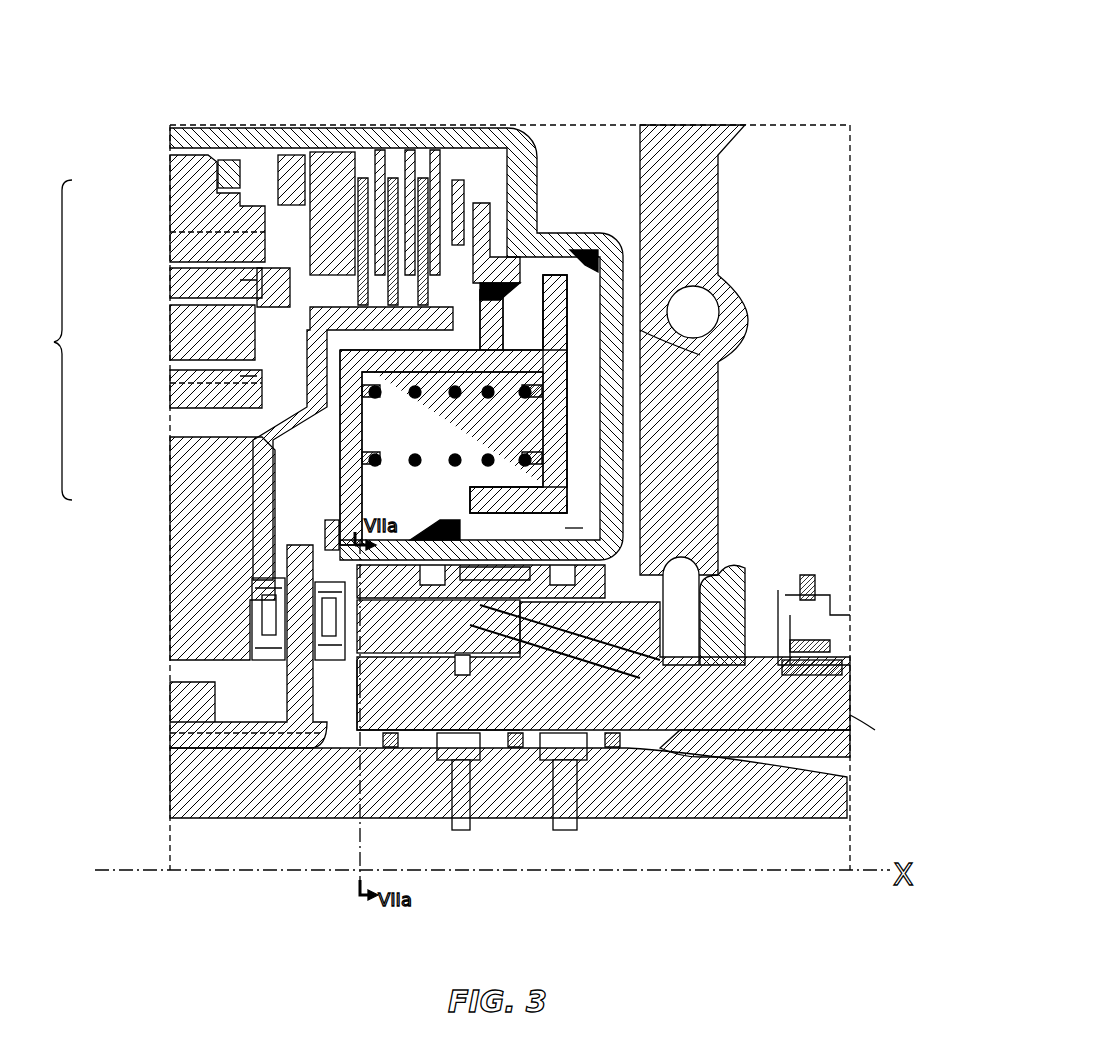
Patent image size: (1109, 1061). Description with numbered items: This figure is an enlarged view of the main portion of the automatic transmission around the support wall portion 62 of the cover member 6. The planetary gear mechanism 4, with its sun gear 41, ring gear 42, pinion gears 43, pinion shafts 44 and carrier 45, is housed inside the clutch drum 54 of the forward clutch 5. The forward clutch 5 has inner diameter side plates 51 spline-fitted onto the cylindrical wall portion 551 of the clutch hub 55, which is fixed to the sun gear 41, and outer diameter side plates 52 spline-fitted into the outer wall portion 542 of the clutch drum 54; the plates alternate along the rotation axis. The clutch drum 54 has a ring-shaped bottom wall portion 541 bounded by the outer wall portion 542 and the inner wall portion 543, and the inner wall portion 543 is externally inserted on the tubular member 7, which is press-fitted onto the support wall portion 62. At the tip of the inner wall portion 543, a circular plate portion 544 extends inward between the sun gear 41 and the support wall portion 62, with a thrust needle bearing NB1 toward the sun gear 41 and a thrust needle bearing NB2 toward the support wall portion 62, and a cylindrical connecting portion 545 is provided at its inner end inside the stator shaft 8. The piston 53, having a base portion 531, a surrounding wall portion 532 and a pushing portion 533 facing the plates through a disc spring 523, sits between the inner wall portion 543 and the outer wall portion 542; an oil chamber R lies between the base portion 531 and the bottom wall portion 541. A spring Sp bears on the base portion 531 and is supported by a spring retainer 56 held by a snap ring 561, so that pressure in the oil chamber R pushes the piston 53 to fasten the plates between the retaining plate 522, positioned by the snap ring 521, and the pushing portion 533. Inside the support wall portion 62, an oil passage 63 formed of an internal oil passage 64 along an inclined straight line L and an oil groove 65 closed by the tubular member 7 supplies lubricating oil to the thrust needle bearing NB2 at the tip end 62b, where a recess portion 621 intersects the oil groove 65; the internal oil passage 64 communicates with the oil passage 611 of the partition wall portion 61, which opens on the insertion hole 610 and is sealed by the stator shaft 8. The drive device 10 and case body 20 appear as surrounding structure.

The planetary gear mechanism 4 is at (156, 407).
The sun gear 41 is at (180, 484).
The ring gear 42 is at (180, 220).
The pinion gears 43 is at (180, 290).
The pinion shafts 44 is at (182, 344).
The carrier 45 is at (182, 396).
The forward clutch 5 is at (555, 150).
The inner diameter side plates 51 is at (350, 150).
The outer diameter side plates 52 is at (420, 150).
The snap ring 521 is at (290, 150).
The retaining plate 522 is at (328, 152).
The disc spring 523 is at (465, 200).
The piston 53 is at (640, 128).
The base portion 531 is at (545, 428).
The surrounding wall portion 532 is at (570, 255).
The pushing portion 533 is at (488, 160).
The clutch drum 54 is at (537, 128).
The bottom wall portion 541 is at (700, 355).
The outer wall portion 542 is at (213, 130).
The inner wall portion 543 is at (405, 535).
The circular plate portion 544 is at (310, 695).
The cylindrical connecting portion 545 is at (239, 788).
The clutch hub 55 is at (296, 440).
The cylindrical wall portion 551 is at (295, 312).
The spring retainer 56 is at (375, 418).
The snap ring 561 is at (320, 525).
The spring Sp is at (522, 385).
The oil chamber R is at (574, 515).
The cover member 6 is at (744, 358).
The partition wall portion 61 is at (720, 215).
The insertion hole 610 is at (720, 660).
The oil passage 611 is at (742, 575).
The support wall portion 62 is at (603, 678).
The tip end 62b is at (438, 637).
The recess portion 621 is at (420, 660).
The oil passage 63 is at (501, 845).
The internal oil passage 64 is at (590, 800).
The oil groove 65 is at (470, 800).
The tubular member 7 is at (612, 560).
The stator shaft 8 is at (845, 688).
The drive device 10 is at (628, 505).
The case body 20 is at (458, 783).
The thrust needle bearing NB1 is at (258, 600).
The thrust needle bearing NB2 is at (330, 625).
The straight line L is at (873, 733).